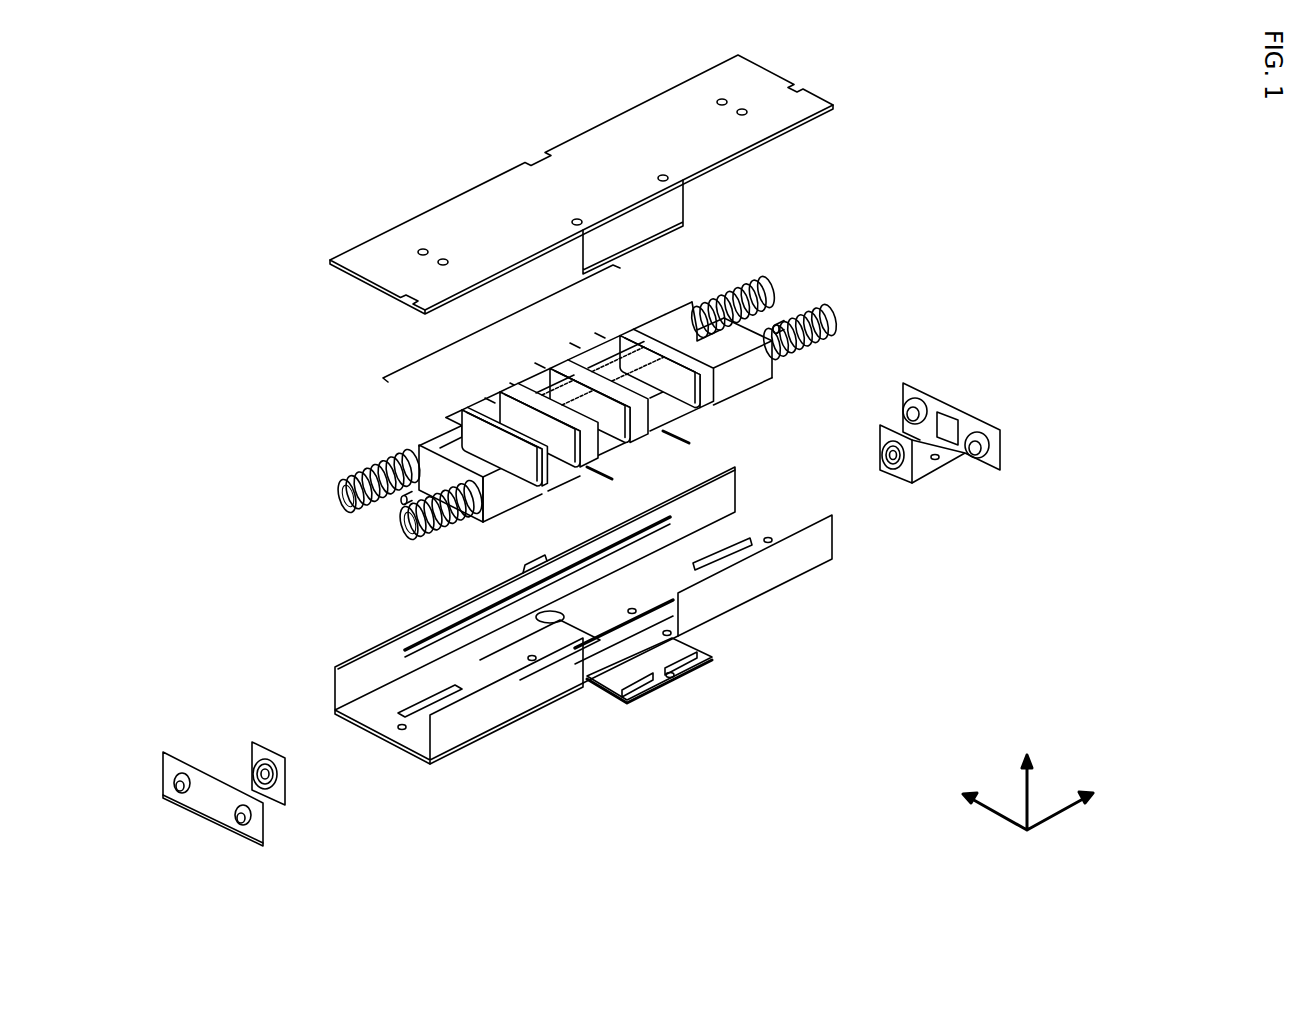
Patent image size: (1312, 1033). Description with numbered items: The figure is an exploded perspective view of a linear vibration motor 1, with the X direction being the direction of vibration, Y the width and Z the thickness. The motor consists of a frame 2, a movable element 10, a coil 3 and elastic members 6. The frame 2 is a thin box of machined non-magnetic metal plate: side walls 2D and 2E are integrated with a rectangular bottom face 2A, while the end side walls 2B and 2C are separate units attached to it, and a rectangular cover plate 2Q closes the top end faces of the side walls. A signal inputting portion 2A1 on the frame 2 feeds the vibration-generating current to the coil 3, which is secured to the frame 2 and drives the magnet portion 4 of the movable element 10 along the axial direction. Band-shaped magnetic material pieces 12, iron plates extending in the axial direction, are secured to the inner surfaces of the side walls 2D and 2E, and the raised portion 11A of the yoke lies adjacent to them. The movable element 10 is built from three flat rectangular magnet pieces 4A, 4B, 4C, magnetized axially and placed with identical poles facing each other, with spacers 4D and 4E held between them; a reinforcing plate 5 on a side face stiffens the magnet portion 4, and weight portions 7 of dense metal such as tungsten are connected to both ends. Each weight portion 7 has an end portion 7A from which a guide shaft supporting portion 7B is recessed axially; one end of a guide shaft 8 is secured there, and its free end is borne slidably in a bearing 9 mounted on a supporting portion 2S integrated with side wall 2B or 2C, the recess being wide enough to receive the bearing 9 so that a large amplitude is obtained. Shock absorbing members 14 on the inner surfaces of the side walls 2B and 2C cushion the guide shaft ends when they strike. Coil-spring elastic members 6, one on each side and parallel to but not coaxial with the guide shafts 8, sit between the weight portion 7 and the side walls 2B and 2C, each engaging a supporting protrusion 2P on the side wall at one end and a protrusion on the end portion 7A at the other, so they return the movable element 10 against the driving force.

The linear vibration motor 1 is at (950, 112).
The frame 2 is at (830, 600).
The cover plate 2Q is at (835, 102).
The side wall 2D is at (400, 650).
The side wall 2E is at (510, 712).
The bottom face 2A is at (760, 525).
The signal inputting portion 2A1 is at (630, 692).
The side wall 2B is at (935, 395).
The side wall 2C is at (200, 765).
The supporting protrusion 2P is at (905, 415).
The supporting portion 2S is at (880, 430).
The bearing 9 is at (890, 470).
The shock absorbing member 14 is at (950, 420).
The magnetic material piece 12 is at (500, 600).
The movable element 10 is at (740, 400).
The coil 3 is at (645, 440).
The magnet portion 4 is at (505, 320).
The magnet piece 4A is at (490, 400).
The magnet piece 4B is at (540, 365).
The magnet piece 4C is at (600, 335).
The spacer 4D is at (515, 385).
The spacer 4E is at (575, 345).
The reinforcing plate 5 is at (440, 408).
The elastic member 6 is at (750, 305).
The weight portion 7 is at (668, 318).
The end portion 7A is at (690, 310).
The guide shaft supporting portion 7B is at (745, 322).
The guide shaft 8 is at (790, 330).
The raised portion 11A is at (700, 408).